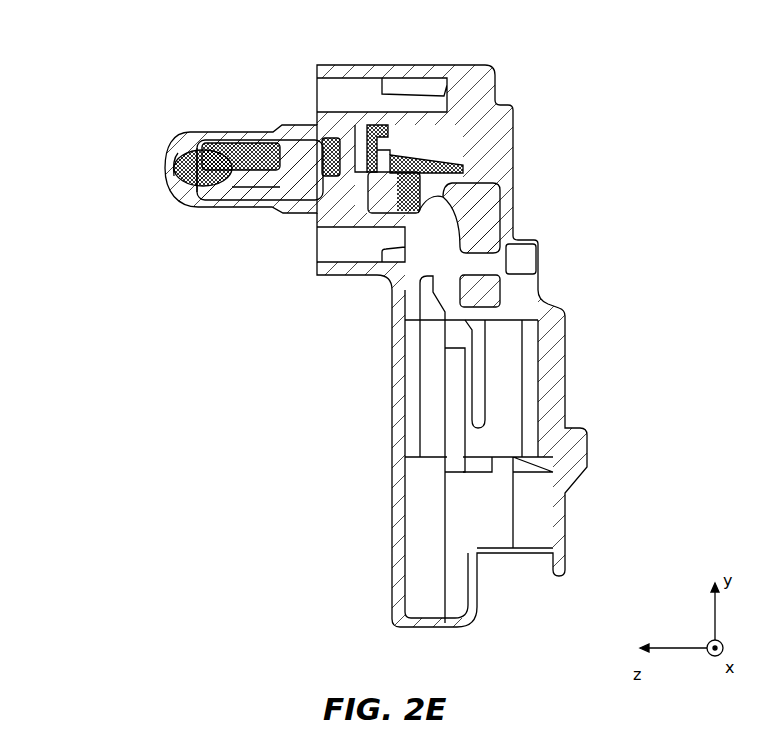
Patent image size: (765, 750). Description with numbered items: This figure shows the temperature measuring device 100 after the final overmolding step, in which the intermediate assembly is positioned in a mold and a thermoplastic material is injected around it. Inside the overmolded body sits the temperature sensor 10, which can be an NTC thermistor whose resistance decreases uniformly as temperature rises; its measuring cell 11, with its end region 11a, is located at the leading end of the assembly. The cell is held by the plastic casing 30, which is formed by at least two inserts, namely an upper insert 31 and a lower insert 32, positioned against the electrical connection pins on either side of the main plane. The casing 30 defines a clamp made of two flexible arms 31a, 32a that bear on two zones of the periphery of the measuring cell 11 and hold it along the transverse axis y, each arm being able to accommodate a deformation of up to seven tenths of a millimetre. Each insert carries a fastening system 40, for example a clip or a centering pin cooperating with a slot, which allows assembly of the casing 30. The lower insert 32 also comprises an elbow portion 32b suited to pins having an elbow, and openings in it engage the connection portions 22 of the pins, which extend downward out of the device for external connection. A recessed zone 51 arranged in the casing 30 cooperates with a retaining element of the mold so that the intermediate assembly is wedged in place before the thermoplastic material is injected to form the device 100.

The temperature measuring device 100 is at (379, 320).
The recessed zone 51 is at (570, 244).
The fastening system 40 is at (250, 229).
The plastic casing 30 is at (283, 285).
The upper insert 31 is at (265, 148).
The flexible arm 31a is at (208, 153).
The lower insert 32 is at (255, 190).
The flexible arm 32a is at (215, 190).
The elbow portion 32b is at (480, 218).
The temperature sensor 10 is at (135, 218).
The measuring cell 11 is at (183, 190).
The conductor end 11a is at (160, 179).
The connection portion 22 is at (477, 377).